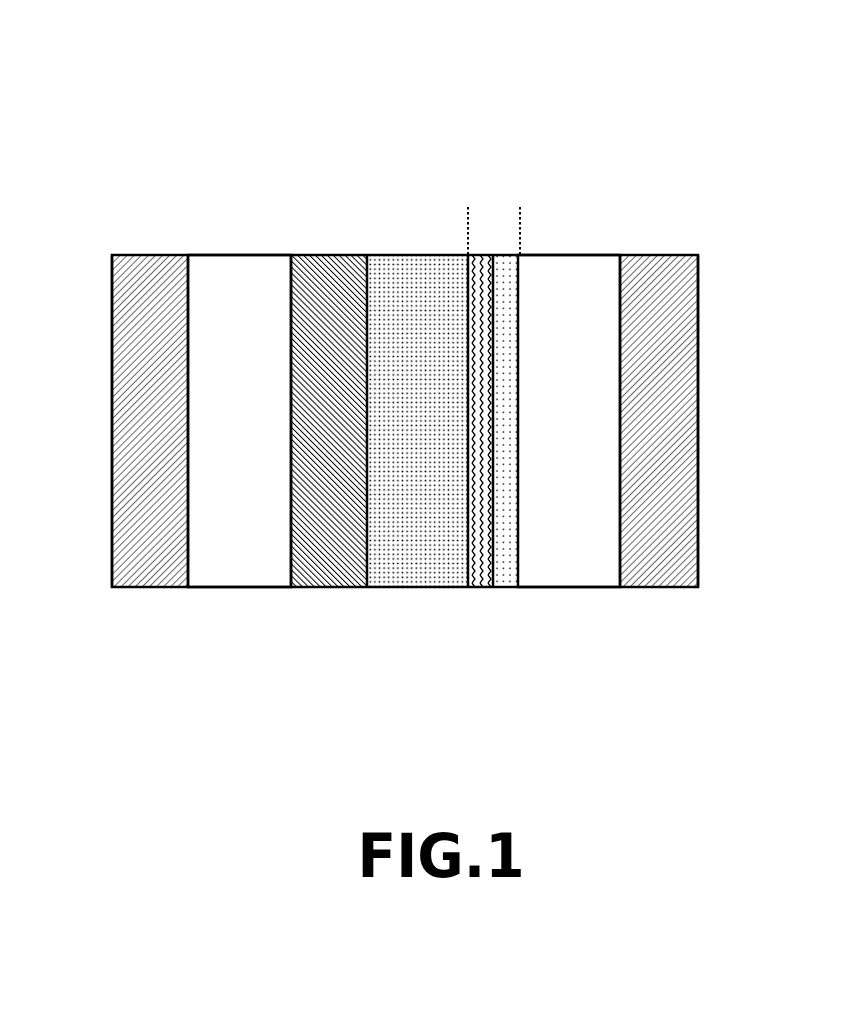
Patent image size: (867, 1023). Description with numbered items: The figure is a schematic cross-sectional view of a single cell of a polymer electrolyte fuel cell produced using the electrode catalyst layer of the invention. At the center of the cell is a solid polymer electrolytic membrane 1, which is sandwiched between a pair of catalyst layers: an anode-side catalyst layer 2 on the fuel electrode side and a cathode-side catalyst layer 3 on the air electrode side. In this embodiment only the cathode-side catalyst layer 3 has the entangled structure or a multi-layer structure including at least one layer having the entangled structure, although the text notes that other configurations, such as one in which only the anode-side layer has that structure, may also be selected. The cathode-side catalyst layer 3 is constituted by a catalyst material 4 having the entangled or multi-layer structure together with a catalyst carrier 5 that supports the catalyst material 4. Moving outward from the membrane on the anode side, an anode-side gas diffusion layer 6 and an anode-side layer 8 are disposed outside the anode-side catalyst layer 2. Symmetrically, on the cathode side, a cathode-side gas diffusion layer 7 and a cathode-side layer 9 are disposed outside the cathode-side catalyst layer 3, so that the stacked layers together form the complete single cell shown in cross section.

The solid polymer electrolytic membrane 1 is at (387, 255).
The anode-side catalyst layer 2 is at (323, 255).
The cathode-side catalyst layer 3 is at (520, 207).
The catalyst material 4 is at (470, 262).
The catalyst carrier 5 is at (508, 295).
The anode-side gas diffusion layer 6 is at (235, 587).
The cathode-side gas diffusion layer 7 is at (558, 587).
The anode-side layer 8 is at (142, 587).
The cathode-side layer 9 is at (670, 587).